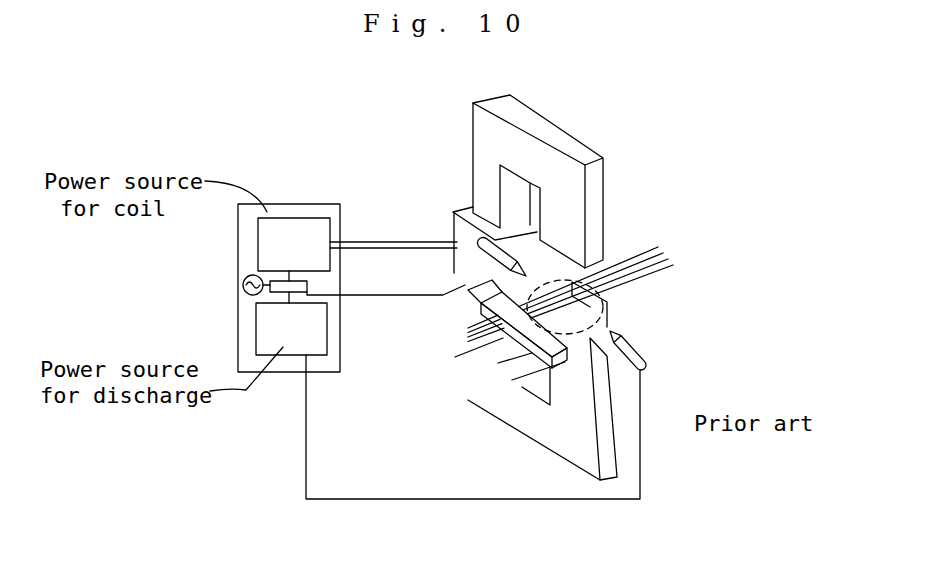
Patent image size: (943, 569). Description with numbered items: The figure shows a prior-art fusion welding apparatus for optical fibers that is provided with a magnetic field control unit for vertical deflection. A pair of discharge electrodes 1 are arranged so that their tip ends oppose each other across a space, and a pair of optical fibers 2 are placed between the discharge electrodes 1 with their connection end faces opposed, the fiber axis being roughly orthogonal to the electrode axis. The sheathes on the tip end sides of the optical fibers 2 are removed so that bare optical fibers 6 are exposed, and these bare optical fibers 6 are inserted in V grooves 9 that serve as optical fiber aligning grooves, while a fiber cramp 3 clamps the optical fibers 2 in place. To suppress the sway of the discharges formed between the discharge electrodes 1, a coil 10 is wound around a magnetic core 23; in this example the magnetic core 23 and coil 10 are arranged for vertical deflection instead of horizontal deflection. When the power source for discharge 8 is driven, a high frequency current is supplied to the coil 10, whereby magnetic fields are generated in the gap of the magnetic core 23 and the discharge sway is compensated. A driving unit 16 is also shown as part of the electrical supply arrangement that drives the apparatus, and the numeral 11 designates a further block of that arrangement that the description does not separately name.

The discharge electrode 1 is at (480, 250).
The optical fiber 2 is at (470, 347).
The fiber cramp 3 is at (478, 305).
The bare optical fiber 6 is at (556, 291).
The power source for discharge 8 is at (257, 329).
The V groove 9 is at (490, 343).
The coil 10 is at (457, 224).
The power source for coil 11 is at (258, 250).
The driving unit 16 is at (301, 204).
The magnetic core 23 is at (482, 147).